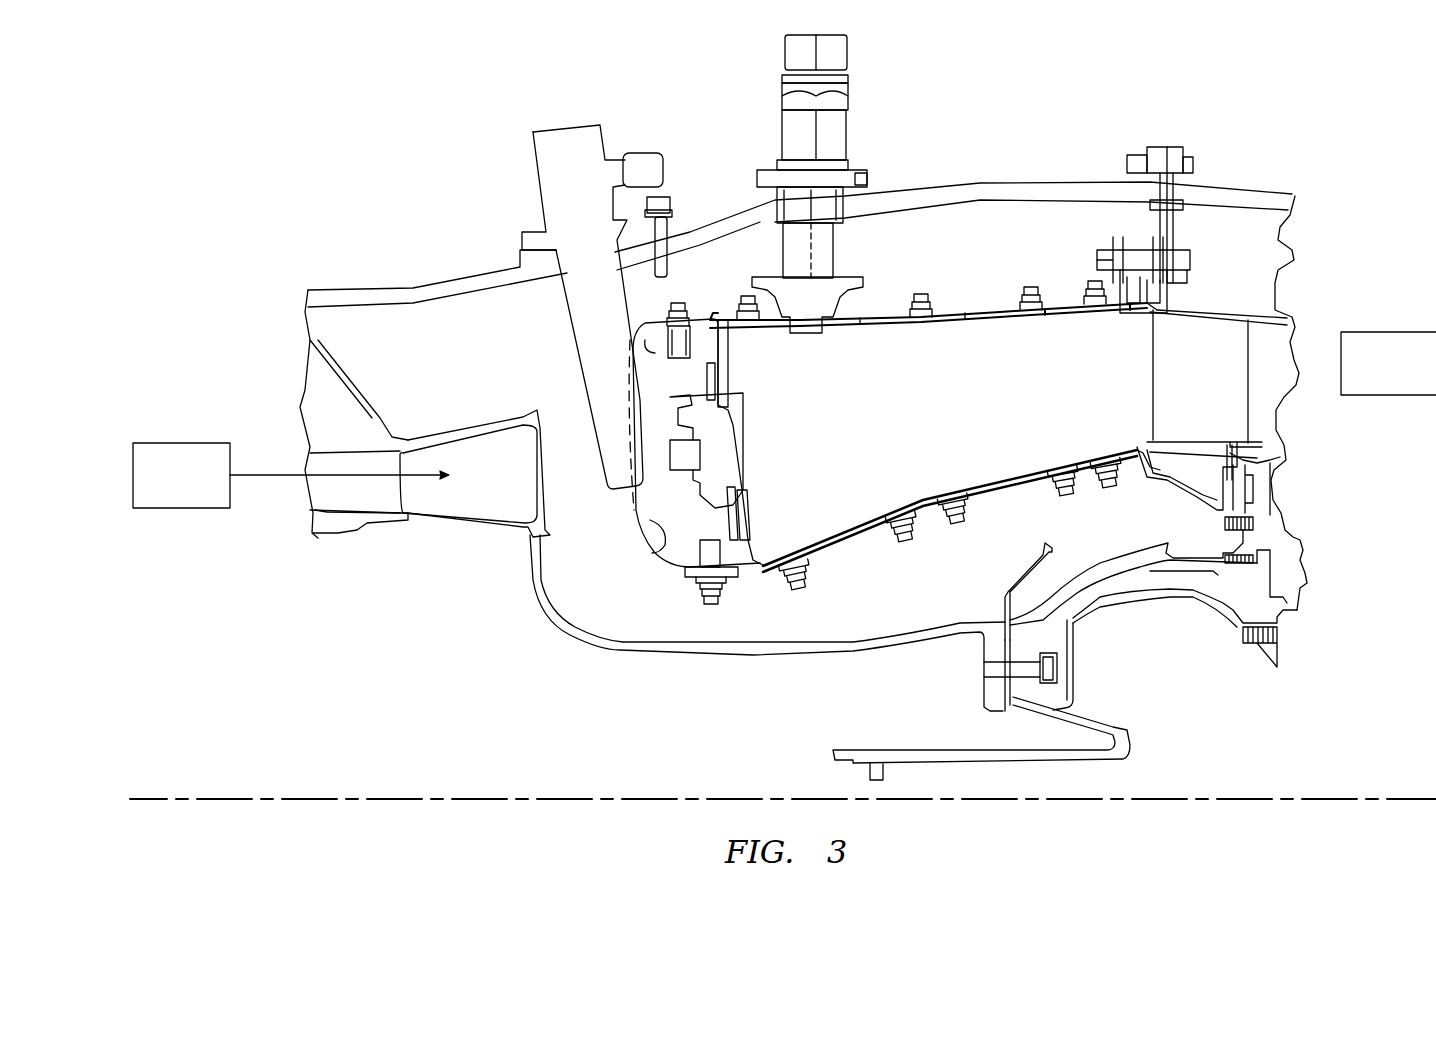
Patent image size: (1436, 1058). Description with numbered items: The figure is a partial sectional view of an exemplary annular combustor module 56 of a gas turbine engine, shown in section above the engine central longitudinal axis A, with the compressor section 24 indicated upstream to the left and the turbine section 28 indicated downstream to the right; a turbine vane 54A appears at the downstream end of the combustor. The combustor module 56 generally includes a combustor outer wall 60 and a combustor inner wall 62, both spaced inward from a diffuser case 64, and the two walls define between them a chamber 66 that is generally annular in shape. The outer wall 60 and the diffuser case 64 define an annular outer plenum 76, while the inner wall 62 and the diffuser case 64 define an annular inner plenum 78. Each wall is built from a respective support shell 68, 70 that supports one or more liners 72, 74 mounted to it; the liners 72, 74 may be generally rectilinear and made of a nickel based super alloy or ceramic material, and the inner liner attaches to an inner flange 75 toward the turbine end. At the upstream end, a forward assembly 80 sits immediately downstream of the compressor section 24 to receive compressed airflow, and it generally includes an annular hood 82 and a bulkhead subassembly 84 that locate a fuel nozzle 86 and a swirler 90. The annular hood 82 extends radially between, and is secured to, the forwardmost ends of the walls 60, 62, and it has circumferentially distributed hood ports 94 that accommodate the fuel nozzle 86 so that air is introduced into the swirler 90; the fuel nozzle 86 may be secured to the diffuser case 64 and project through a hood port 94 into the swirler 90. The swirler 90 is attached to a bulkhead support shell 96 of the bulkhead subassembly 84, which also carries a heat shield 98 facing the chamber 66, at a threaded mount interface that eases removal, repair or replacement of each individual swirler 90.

The compressor section 24 is at (198, 489).
The turbine section 28 is at (1404, 378).
The turbine vane 54A is at (1225, 393).
The combustor module 56 is at (1105, 128).
The combustor outer wall 60 is at (989, 300).
The combustor inner wall 62 is at (937, 538).
The diffuser case 64 is at (1020, 176).
The chamber 66 is at (944, 430).
The support shell 68 is at (948, 318).
The support shell 70 is at (1010, 488).
The liner 72 is at (847, 324).
The liner 74 is at (997, 470).
The inner flange 75 is at (1105, 486).
The annular outer plenum 76 is at (919, 251).
The annular inner plenum 78 is at (897, 630).
The forward assembly 80 is at (648, 597).
The annular hood 82 is at (640, 541).
The bulkhead subassembly 84 is at (742, 382).
The fuel nozzle 86 is at (603, 258).
The swirler 90 is at (746, 483).
The hood port 94 is at (667, 527).
The bulkhead support shell 96 is at (683, 571).
The heat shield 98 is at (751, 513).
The engine central longitudinal axis A is at (1333, 799).